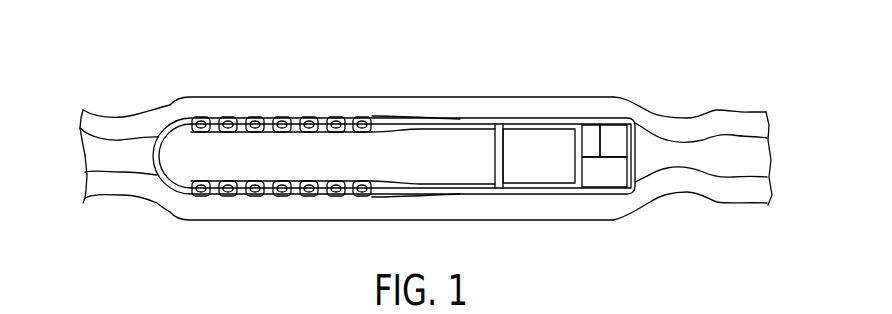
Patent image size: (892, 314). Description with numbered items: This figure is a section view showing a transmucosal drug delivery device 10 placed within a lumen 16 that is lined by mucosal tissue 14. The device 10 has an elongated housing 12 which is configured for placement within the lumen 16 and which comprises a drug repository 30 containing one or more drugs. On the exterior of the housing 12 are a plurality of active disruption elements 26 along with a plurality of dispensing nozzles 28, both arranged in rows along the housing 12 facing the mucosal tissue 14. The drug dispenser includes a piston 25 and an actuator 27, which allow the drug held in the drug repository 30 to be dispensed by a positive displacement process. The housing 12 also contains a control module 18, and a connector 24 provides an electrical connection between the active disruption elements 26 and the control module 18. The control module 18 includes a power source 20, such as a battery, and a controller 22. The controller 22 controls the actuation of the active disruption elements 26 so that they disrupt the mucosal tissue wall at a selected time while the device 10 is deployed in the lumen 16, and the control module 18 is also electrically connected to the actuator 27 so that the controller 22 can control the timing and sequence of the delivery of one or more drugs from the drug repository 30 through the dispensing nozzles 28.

The transmucosal drug delivery device 10 is at (523, 120).
The housing 12 is at (172, 195).
The mucosal tissue 14 is at (140, 128).
The lumen 16 is at (650, 156).
The control module 18 is at (590, 132).
The power source 20 is at (603, 180).
The controller 22 is at (613, 134).
The connector 24 is at (382, 124).
The piston 25 is at (494, 124).
The active disruption elements 26 is at (228, 114).
The actuator 27 is at (540, 173).
The dispensing nozzles 28 is at (296, 114).
The drug repository 30 is at (407, 143).